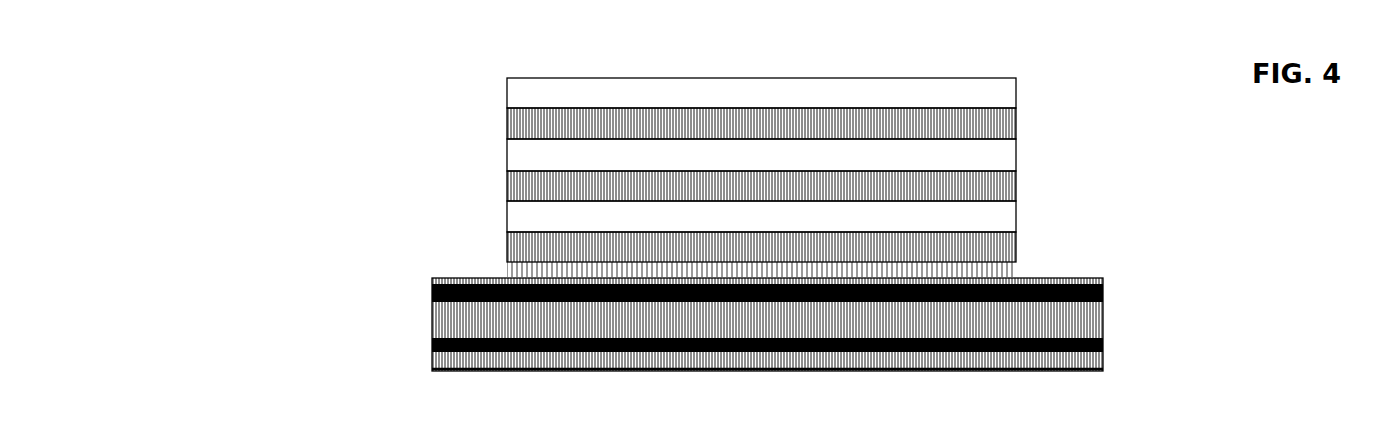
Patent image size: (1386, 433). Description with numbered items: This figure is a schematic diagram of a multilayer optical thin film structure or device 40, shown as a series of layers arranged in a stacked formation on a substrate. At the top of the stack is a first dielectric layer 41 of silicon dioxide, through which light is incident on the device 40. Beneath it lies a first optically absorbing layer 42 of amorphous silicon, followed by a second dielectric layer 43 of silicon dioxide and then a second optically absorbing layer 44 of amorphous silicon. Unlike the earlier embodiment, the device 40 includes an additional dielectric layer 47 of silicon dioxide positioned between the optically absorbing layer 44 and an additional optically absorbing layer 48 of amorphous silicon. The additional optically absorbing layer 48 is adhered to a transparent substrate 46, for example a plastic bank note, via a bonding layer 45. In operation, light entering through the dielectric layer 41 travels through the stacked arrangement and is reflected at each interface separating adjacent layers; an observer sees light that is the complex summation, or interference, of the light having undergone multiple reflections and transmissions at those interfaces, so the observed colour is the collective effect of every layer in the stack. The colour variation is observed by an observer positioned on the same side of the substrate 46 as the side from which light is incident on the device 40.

The multilayer optical thin film structure 40 is at (318, 174).
The first dielectric layer 41 is at (1016, 93).
The first optically absorbing layer 42 is at (1016, 124).
The second dielectric layer 43 is at (1016, 155).
The second optically absorbing layer 44 is at (1016, 186).
The bonding layer 45 is at (507, 272).
The transparent substrate 46 is at (1103, 327).
The additional dielectric layer 47 is at (1016, 217).
The additional optically absorbing layer 48 is at (1016, 248).